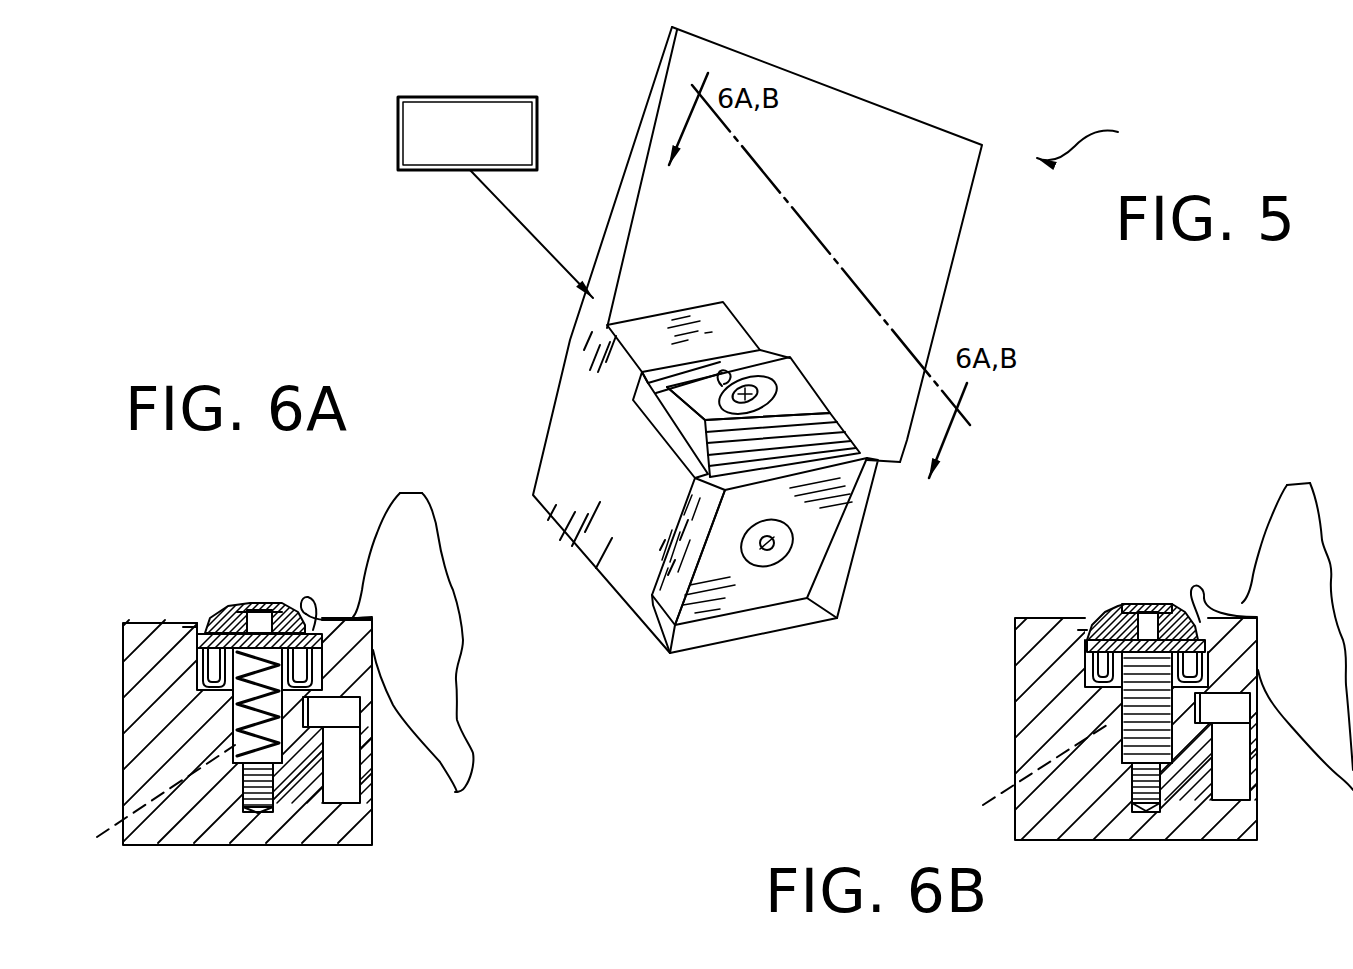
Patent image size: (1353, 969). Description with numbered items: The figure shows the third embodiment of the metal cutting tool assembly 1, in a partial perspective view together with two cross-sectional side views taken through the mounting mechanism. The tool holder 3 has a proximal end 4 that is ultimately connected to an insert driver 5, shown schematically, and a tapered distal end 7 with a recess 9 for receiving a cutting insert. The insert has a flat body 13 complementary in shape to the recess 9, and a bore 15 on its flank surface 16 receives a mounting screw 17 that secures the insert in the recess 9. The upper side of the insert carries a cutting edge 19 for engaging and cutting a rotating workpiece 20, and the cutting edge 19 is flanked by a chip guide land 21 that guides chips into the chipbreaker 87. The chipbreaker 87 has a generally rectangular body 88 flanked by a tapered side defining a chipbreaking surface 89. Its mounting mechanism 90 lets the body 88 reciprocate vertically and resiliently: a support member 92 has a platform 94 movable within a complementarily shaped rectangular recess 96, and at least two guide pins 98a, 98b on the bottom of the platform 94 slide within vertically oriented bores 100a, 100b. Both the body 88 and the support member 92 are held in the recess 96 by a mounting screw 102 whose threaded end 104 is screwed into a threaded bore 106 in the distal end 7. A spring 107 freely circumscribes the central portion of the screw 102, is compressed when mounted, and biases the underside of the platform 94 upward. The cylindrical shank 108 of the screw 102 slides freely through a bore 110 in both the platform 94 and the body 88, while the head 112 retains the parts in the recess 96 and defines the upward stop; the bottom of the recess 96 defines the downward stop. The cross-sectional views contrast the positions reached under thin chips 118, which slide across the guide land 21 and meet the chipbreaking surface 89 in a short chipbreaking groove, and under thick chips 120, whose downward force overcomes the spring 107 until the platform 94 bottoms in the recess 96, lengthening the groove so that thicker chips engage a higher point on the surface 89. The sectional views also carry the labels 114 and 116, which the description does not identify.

In FIG. 5, the metal cutting tool assembly 1 is at (1092, 137).
In FIG. 5, the tool holder 3 is at (848, 184).
In FIG. 5, the proximal end 4 is at (627, 175).
In FIG. 5, the insert driver 5 is at (398, 152).
In FIG. 5, the tapered distal end 7 is at (620, 550).
In FIG. 6A, the recess 9 is at (347, 790).
In FIG. 6B, the recess 9 is at (1230, 787).
In FIG. 5, the flat body 13 is at (660, 633).
In FIG. 6A, the bore 15 is at (373, 757).
In FIG. 6B, the bore 15 is at (1258, 757).
In FIG. 5, the flank surface 16 is at (753, 593).
In FIG. 5, the mounting screw 17 is at (783, 540).
In FIG. 5, the cutting edge 19 is at (866, 462).
In FIG. 6A, the rotating workpiece 20 is at (443, 726).
In FIG. 6B, the rotating workpiece 20 is at (1330, 726).
In FIG. 5, the chip guide land 21 is at (830, 447).
In FIG. 5, the chipbreaker 87 is at (787, 357).
In FIG. 5, the rectangular body 88 is at (784, 377).
In FIG. 5, the chipbreaking surface 89 is at (810, 413).
In FIG. 6A, the mounting mechanism 90 is at (246, 586).
In FIG. 6B, the mounting mechanism 90 is at (1136, 578).
In FIG. 6A, the support member 92 is at (190, 640).
In FIG. 6B, the support member 92 is at (1082, 645).
In FIG. 6A, the platform 94 is at (207, 637).
In FIG. 6B, the platform 94 is at (1093, 637).
In FIG. 5, the rectangular recess 96 is at (650, 417).
In FIG. 6A, the guide pin 98a is at (127, 715).
In FIG. 6B, the guide pin 98a is at (1015, 700).
In FIG. 6A, the guide pin 98b is at (330, 665).
In FIG. 6A, the vertically oriented bore 100a is at (127, 757).
In FIG. 6B, the vertically oriented bore 100a is at (1015, 740).
In FIG. 6A, the vertically oriented bore 100b is at (373, 674).
In FIG. 6A, the mounting screw 102 is at (253, 600).
In FIG. 6A, the threaded end 104 is at (141, 809).
In FIG. 6B, the threaded end 104 is at (1020, 778).
In FIG. 6A, the threaded bore 106 is at (243, 800).
In FIG. 6B, the threaded bore 106 is at (1117, 807).
In FIG. 6A, the spring 107 is at (283, 760).
In FIG. 6B, the spring 107 is at (1170, 763).
In FIG. 6A, the cylindrical shank 108 is at (265, 640).
In FIG. 6B, the cylindrical shank 108 is at (1155, 640).
In FIG. 6A, the bore 110 is at (232, 622).
In FIG. 6B, the bore 110 is at (1122, 615).
In FIG. 5, the head 112 is at (727, 377).
In FIG. 6B, the head 112 is at (1140, 603).
In FIG. 6A, the clip flat end 114 is at (363, 617).
In FIG. 6B, the clip flat end 114 is at (1258, 635).
In FIG. 6A, the block 116 is at (123, 690).
In FIG. 6A, the thin chips 118 is at (313, 603).
In FIG. 6B, the thick chips 120 is at (1210, 598).